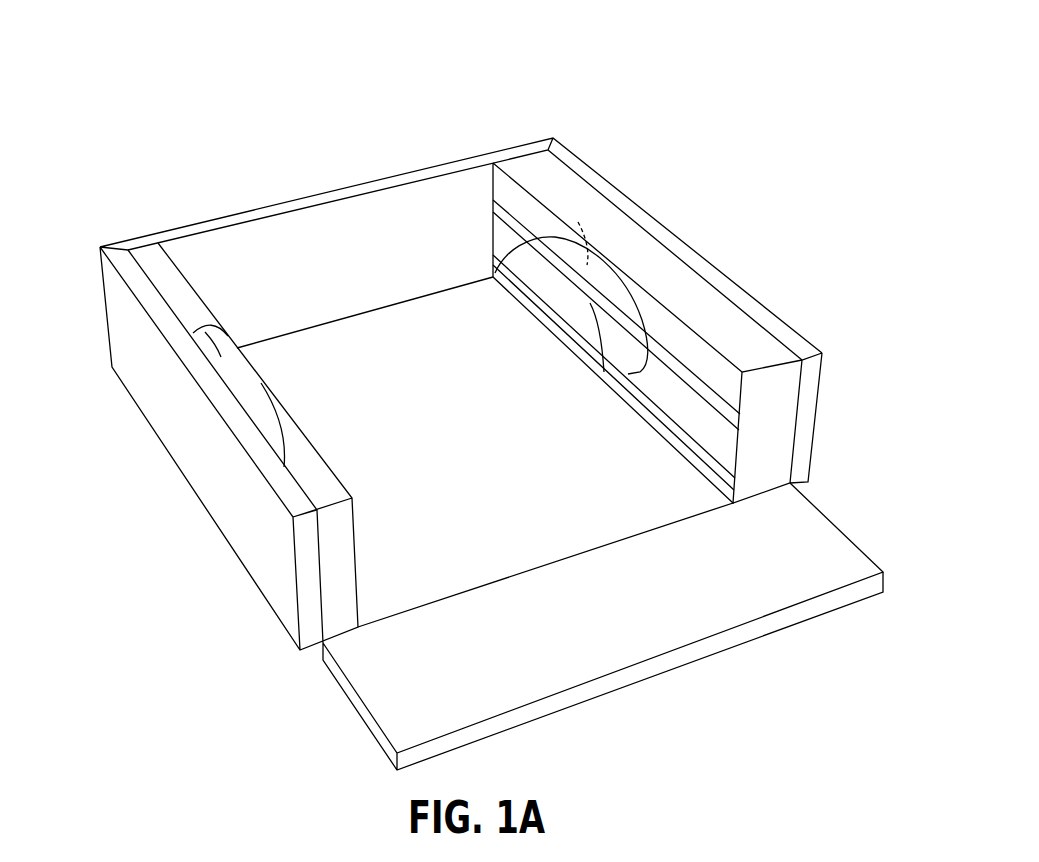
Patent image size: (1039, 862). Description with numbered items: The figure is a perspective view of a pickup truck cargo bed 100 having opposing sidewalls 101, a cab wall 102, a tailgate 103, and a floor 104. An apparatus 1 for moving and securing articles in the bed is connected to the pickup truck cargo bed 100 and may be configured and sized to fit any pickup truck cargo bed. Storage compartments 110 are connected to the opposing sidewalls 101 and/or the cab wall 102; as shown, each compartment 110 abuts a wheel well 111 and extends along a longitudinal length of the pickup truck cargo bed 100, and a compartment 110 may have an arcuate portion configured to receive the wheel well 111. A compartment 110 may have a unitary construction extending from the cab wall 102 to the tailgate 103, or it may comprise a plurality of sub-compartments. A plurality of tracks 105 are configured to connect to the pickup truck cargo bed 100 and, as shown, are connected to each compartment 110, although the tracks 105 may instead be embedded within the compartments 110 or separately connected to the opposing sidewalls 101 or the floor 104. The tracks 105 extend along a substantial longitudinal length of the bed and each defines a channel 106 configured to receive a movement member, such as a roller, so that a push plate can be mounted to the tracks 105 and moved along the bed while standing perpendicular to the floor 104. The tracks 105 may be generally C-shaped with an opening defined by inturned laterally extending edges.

The apparatus 1 is at (690, 216).
The pickup truck cargo bed 100 is at (283, 160).
The opposing sidewalls 101 is at (150, 357).
The cab wall 102 is at (365, 290).
The tailgate 103 is at (783, 532).
The floor 104 is at (545, 452).
The tracks 105 is at (758, 464).
The channel 106 is at (492, 273).
The storage compartments 110 is at (165, 270).
The wheel well 111 is at (195, 332).